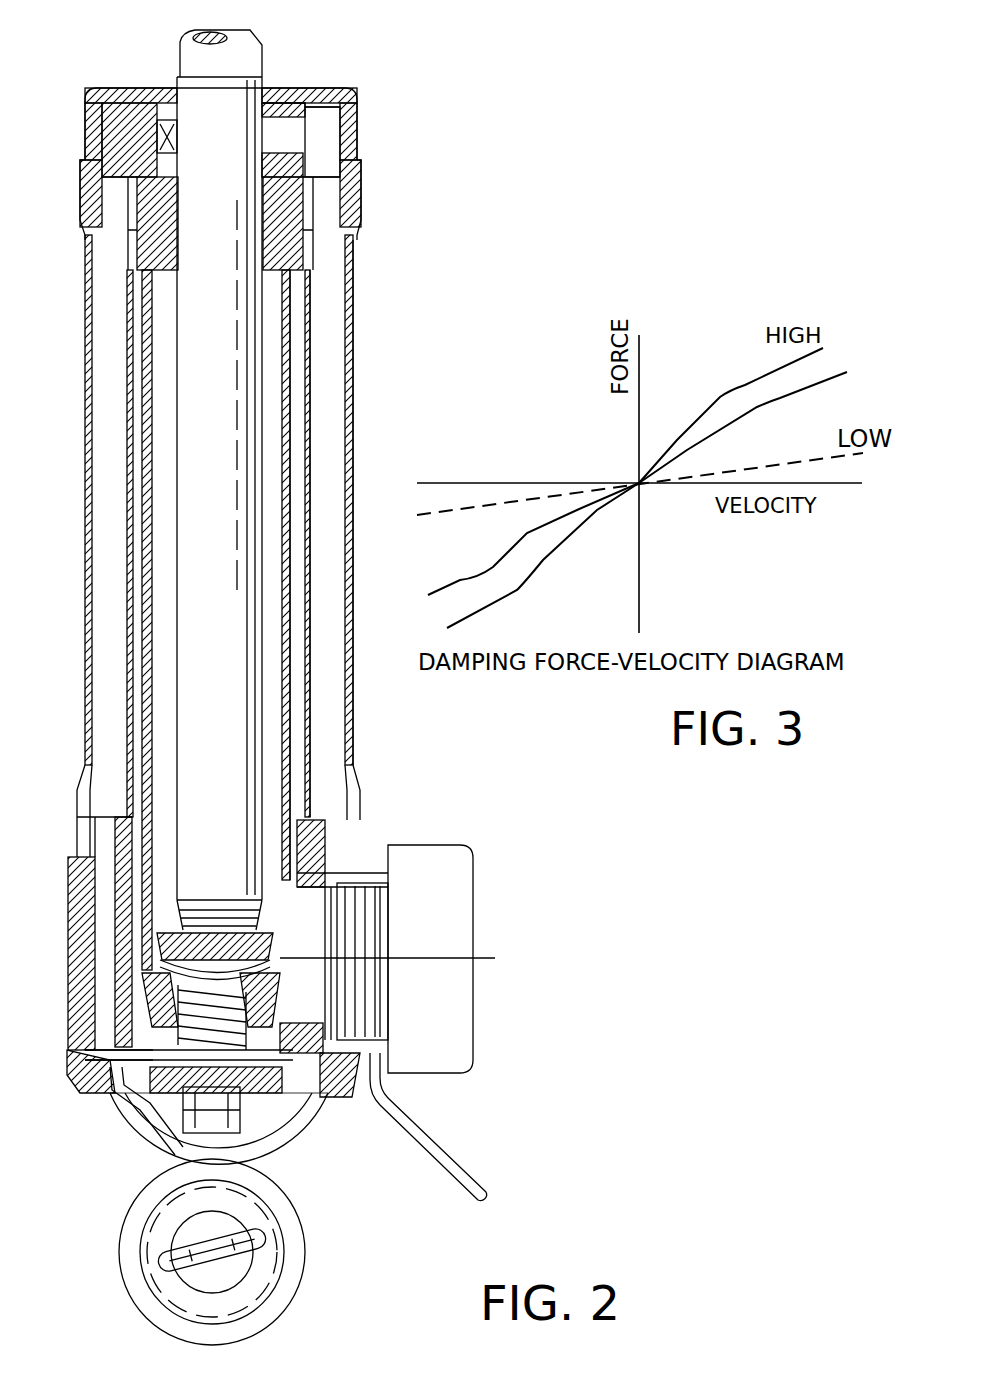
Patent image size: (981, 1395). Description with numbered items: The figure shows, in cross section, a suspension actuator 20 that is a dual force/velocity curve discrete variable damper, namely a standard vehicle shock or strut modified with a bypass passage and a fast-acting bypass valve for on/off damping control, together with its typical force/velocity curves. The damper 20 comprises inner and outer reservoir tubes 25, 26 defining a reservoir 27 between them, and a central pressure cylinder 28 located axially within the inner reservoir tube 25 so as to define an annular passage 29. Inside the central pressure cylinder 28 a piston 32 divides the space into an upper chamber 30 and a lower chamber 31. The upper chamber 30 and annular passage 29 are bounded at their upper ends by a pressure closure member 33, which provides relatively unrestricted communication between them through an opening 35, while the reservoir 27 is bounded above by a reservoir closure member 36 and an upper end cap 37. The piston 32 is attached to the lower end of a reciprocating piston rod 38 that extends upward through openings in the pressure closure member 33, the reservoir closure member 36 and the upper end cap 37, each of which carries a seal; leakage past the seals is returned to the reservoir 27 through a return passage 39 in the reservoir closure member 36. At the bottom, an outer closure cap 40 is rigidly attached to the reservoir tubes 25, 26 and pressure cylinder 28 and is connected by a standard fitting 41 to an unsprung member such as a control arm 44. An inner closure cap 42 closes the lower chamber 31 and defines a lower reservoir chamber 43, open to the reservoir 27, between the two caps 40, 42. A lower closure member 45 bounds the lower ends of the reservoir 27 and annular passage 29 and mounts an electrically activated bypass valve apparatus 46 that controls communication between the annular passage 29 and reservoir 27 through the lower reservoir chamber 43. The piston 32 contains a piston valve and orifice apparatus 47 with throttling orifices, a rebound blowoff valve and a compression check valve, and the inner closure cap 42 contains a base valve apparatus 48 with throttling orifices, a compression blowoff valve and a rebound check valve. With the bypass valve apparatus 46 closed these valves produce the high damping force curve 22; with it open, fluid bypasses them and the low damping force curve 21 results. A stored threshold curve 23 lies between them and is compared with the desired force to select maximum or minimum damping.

In FIG. 2, the actuator 20 is at (412, 284).
In FIG. 3, the low damping force curve 21 is at (770, 463).
In FIG. 3, the high damping force curve 22 is at (717, 400).
In FIG. 3, the threshold curve 23 is at (823, 380).
In FIG. 2, the inner reservoir tube 25 is at (310, 440).
In FIG. 2, the outer reservoir tube 26 is at (352, 378).
In FIG. 2, the reservoir 27 is at (330, 582).
In FIG. 2, the central pressure cylinder 28 is at (140, 597).
In FIG. 2, the annular passage 29 is at (140, 493).
In FIG. 2, the upper chamber 30 is at (278, 748).
In FIG. 2, the lower chamber 31 is at (155, 1022).
In FIG. 2, the piston 32 is at (143, 953).
In FIG. 2, the pressure closure member 33 is at (152, 228).
In FIG. 2, the opening 35 is at (290, 238).
In FIG. 2, the reservoir closure member 36 is at (127, 100).
In FIG. 2, the upper end cap 37 is at (317, 98).
In FIG. 2, the piston rod 38 is at (190, 412).
In FIG. 2, the return passage 39 is at (325, 130).
In FIG. 2, the outer closure cap 40 is at (110, 1108).
In FIG. 2, the fitting 41 is at (298, 1255).
In FIG. 2, the inner closure cap 42 is at (283, 1145).
In FIG. 2, the lower reservoir chamber 43 is at (262, 1150).
In FIG. 2, the control arm 44 is at (233, 1272).
In FIG. 2, the lower closure member 45 is at (317, 850).
In FIG. 2, the bypass valve apparatus 46 is at (440, 958).
In FIG. 2, the piston valve and orifice apparatus 47 is at (218, 965).
In FIG. 2, the base valve apparatus 48 is at (172, 1150).